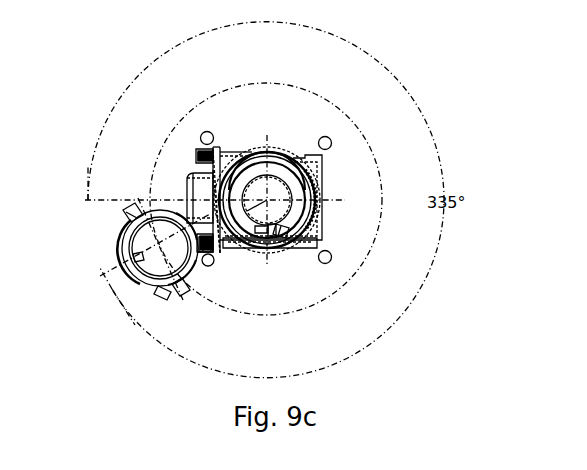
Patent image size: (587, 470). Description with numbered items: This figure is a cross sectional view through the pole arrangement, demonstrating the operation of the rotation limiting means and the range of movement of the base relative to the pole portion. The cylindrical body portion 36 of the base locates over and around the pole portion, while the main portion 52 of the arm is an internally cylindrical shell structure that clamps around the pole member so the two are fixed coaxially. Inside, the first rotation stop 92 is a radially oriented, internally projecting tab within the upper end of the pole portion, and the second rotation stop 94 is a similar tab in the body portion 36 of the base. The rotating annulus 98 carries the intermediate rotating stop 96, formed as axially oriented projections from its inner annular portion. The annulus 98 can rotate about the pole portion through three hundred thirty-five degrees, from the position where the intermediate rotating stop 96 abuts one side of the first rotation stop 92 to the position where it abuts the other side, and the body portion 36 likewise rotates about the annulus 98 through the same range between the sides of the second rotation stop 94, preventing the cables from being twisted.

The body portion 36 is at (272, 150).
The main portion 52 is at (122, 242).
The first rotation stop 92 is at (265, 229).
The second rotation stop 94 is at (280, 229).
The intermediate rotating stop 96 is at (272, 229).
The rotating annulus 98 is at (255, 167).